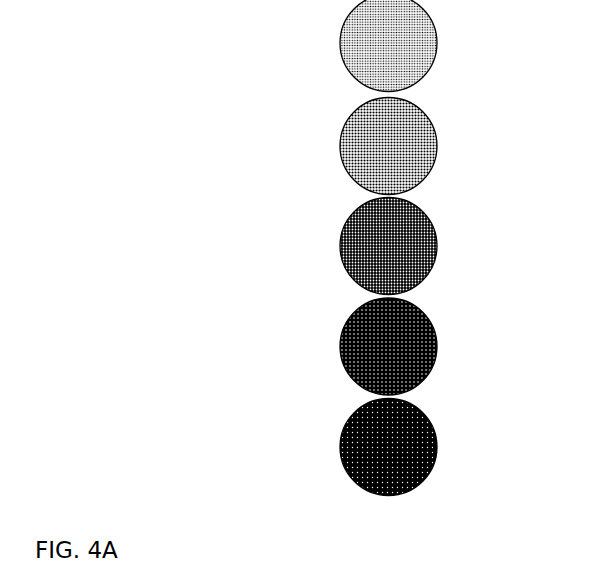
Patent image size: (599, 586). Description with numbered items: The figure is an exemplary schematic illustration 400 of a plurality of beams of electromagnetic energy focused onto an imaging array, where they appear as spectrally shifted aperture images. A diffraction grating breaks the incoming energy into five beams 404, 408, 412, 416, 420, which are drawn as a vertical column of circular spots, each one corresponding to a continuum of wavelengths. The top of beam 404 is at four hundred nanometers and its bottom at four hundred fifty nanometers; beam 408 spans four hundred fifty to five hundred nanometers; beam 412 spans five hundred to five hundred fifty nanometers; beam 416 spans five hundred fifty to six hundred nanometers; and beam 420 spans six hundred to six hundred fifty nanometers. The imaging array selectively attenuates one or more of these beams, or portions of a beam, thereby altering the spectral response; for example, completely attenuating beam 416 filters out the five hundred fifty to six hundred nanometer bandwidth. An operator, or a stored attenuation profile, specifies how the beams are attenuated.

The schematic illustration 400 is at (168, 250).
The beam 404 is at (435, 34).
The beam 408 is at (436, 140).
The beam 412 is at (436, 240).
The beam 416 is at (436, 353).
The beam 420 is at (435, 446).